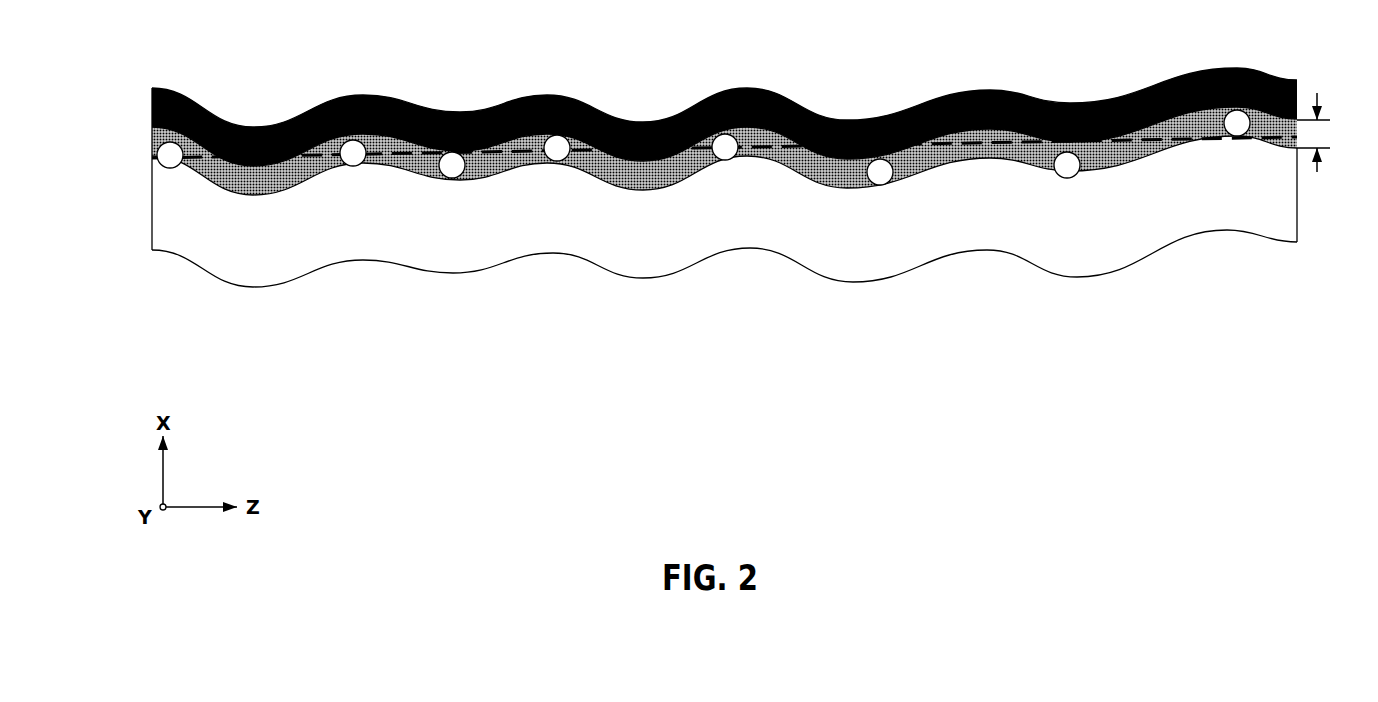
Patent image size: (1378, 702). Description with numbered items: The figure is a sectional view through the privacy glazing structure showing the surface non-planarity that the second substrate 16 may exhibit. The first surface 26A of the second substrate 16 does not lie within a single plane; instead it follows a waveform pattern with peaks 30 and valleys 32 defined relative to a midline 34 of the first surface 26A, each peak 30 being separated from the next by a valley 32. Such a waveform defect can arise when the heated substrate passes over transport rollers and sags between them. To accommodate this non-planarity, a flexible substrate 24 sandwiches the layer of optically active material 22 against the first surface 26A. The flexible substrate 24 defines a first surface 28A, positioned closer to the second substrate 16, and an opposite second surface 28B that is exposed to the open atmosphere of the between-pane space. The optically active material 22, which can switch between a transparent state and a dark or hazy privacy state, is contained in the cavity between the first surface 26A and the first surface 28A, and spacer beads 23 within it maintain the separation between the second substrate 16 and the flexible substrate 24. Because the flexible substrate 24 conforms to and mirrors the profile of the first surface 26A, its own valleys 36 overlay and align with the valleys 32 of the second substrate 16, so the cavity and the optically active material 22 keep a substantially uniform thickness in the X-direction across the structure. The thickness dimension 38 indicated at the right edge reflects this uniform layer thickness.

The second substrate of transparent material 16 is at (726, 232).
The layer of optically active material 22 is at (149, 142).
The spacer beads 23 is at (353, 167).
The flexible substrate 24 is at (150, 108).
The first surface of second substrate 26A is at (215, 184).
The first surface of flexible substrate 28A is at (243, 165).
The second surface of flexible substrate 28B is at (200, 98).
The peaks 30 is at (543, 152).
The valleys 32 is at (853, 188).
The midline 34 is at (552, 140).
The valleys of flexible substrate 36 is at (852, 118).
The thickness of adhesive layer 38 is at (1331, 132).